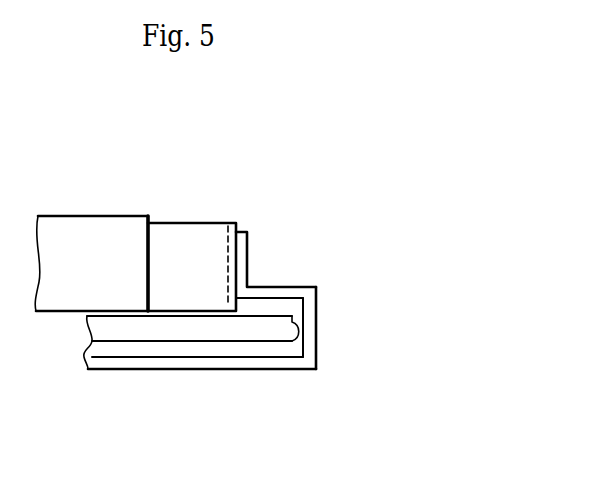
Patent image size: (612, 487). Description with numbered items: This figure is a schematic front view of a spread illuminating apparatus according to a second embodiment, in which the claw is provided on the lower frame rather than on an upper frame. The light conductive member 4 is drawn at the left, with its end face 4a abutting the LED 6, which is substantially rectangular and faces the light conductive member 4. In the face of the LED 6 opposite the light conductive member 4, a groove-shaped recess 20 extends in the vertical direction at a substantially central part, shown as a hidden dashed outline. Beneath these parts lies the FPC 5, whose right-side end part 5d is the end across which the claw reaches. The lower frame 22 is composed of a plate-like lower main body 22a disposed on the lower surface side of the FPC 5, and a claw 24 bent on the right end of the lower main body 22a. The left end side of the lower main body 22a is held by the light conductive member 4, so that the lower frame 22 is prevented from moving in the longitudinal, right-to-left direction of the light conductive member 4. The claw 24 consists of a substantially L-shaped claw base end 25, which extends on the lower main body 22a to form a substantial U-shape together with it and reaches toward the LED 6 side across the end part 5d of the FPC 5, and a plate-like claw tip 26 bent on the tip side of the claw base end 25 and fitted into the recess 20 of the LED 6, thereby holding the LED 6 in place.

The light conductive member 4 is at (75, 241).
The end face of housing block 4a is at (147, 253).
The LED 6 is at (185, 241).
The recess 20 is at (228, 240).
The FPC 5 is at (145, 328).
The end part 5d is at (291, 342).
The lower frame 22 is at (311, 287).
The claw 24 is at (351, 280).
The claw tip 26 is at (240, 264).
The claw base end 25 is at (353, 306).
The lower main body 22a is at (287, 370).